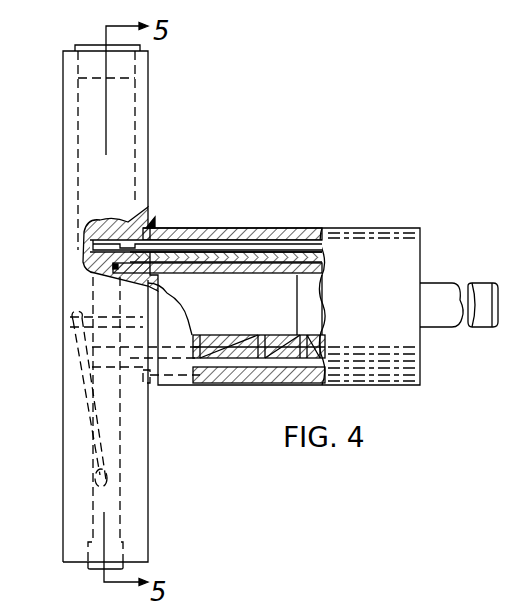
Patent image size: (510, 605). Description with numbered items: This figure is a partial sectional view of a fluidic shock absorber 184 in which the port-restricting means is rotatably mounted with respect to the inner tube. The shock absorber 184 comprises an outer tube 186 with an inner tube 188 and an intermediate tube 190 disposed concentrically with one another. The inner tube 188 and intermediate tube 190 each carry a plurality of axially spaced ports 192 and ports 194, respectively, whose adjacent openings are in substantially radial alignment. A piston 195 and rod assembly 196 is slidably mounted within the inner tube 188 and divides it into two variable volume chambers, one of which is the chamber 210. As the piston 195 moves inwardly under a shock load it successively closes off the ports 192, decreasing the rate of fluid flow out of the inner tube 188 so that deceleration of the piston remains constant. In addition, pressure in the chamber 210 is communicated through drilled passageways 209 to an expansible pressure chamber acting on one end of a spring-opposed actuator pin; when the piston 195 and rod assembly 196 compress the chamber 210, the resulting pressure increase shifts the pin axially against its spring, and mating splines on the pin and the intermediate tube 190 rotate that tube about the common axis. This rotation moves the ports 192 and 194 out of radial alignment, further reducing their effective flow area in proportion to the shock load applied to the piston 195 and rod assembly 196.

The fluidic shock absorber 184 is at (324, 185).
The outer tube 186 is at (223, 228).
The inner tube 188 is at (316, 270).
The intermediate tube 190 is at (322, 259).
The ports 192 is at (213, 316).
The ports 194 is at (225, 383).
The piston 195 is at (296, 314).
The rod assembly 196 is at (436, 284).
The drilled passageways 209 is at (105, 461).
The variable volume chamber 210 is at (235, 305).